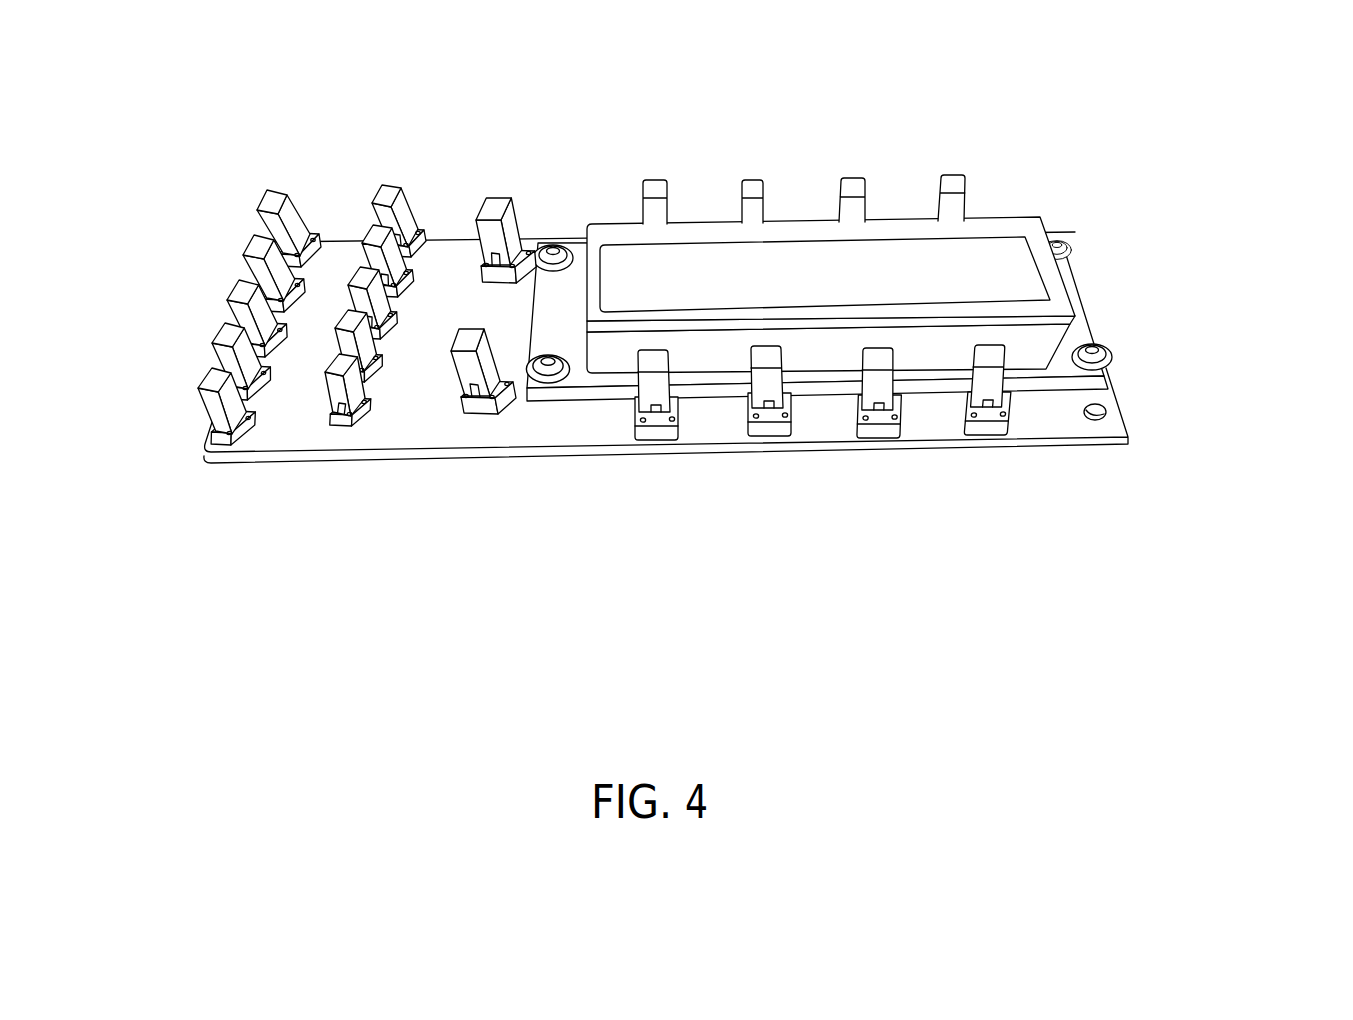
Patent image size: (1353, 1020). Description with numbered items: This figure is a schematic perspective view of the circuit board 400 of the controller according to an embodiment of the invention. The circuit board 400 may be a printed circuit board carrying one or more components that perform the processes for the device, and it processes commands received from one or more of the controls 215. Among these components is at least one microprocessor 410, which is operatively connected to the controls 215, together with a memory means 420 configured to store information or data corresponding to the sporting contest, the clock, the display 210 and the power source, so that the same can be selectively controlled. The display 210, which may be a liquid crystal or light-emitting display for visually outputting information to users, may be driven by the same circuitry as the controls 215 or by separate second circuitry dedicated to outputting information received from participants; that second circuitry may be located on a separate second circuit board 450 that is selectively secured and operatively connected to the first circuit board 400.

The display 210 is at (921, 290).
The controls 215 is at (498, 198).
The circuit board 400 is at (1050, 430).
The microprocessor 410 is at (1087, 279).
The memory means 420 is at (1097, 311).
The second circuit board 450 is at (1042, 367).